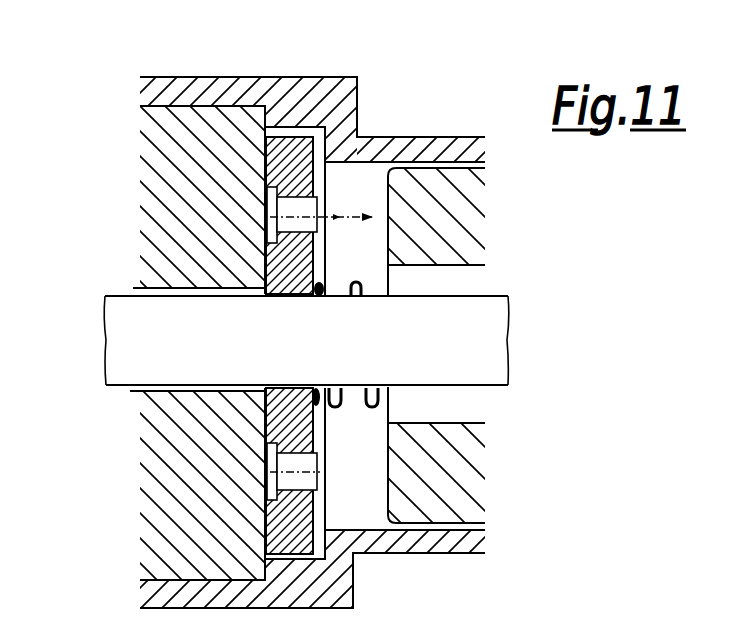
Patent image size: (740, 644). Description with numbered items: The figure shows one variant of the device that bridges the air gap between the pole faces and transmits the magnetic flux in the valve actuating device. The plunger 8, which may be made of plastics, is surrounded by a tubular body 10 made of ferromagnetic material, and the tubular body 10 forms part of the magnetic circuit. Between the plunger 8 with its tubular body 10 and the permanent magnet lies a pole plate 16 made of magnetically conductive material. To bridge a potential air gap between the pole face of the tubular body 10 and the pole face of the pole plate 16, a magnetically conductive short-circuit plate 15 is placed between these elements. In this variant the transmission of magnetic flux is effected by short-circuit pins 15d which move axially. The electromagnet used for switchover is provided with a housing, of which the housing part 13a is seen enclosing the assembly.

The housing 13a is at (285, 93).
The magnetically conductive short-circuit plate 15 is at (288, 158).
The short-circuit pins 15d is at (332, 163).
The tubular body 10 is at (449, 220).
The plunger 8 is at (127, 320).
The pole plate 16 is at (177, 462).